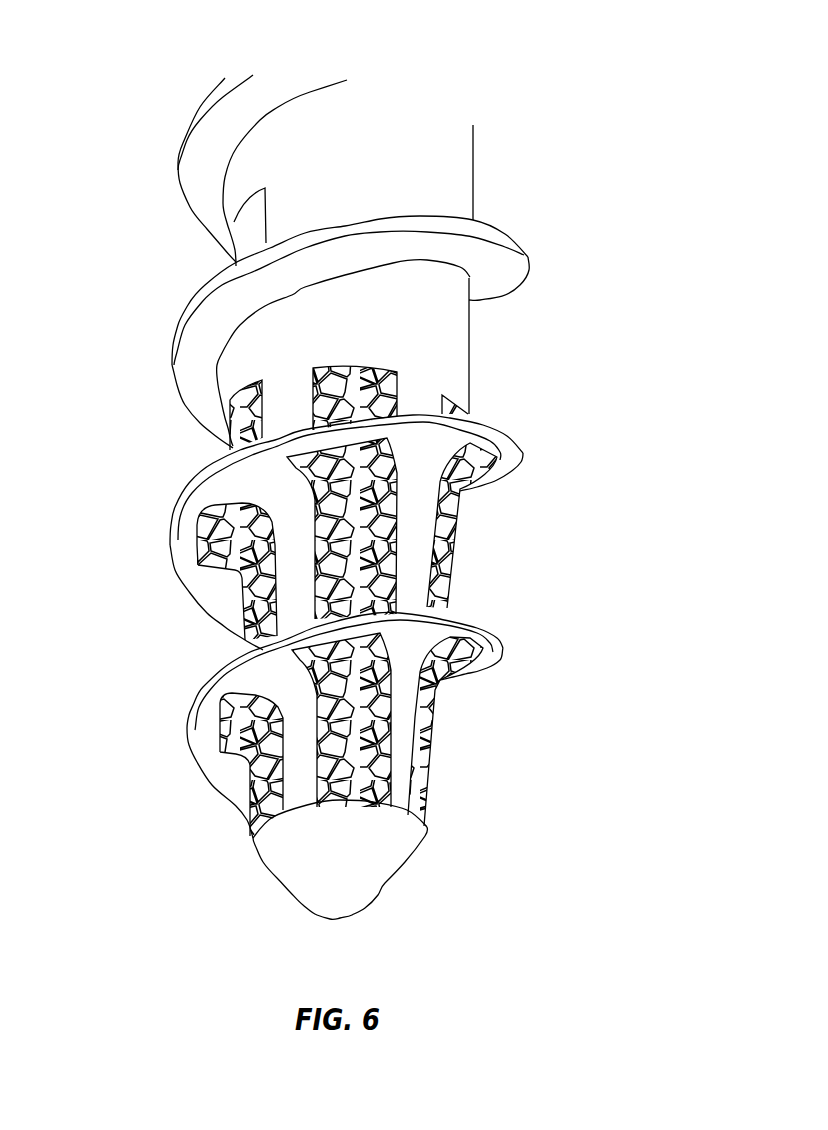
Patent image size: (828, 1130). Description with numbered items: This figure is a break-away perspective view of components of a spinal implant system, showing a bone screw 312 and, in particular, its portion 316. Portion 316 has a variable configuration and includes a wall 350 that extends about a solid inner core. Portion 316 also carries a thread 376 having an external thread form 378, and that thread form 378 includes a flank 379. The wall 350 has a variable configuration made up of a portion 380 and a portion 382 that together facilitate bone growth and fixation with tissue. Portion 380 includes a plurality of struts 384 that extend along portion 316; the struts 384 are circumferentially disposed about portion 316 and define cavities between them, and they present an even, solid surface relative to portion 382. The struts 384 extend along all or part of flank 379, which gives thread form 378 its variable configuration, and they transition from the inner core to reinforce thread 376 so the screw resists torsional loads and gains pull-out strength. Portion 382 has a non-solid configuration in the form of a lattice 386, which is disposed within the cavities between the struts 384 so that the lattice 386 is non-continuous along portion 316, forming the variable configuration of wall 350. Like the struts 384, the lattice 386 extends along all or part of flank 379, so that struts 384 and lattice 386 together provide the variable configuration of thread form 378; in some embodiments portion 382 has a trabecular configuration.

The portion 316 is at (85, 96).
The bone screw 312 is at (630, 243).
The external thread form 378 is at (490, 435).
The thread 376 is at (523, 440).
The flank 379 is at (490, 477).
The wall 350 is at (453, 527).
The struts 384 is at (412, 543).
The lattice 386 is at (330, 575).
The portion 382 is at (328, 548).
The portion 380 is at (413, 570).